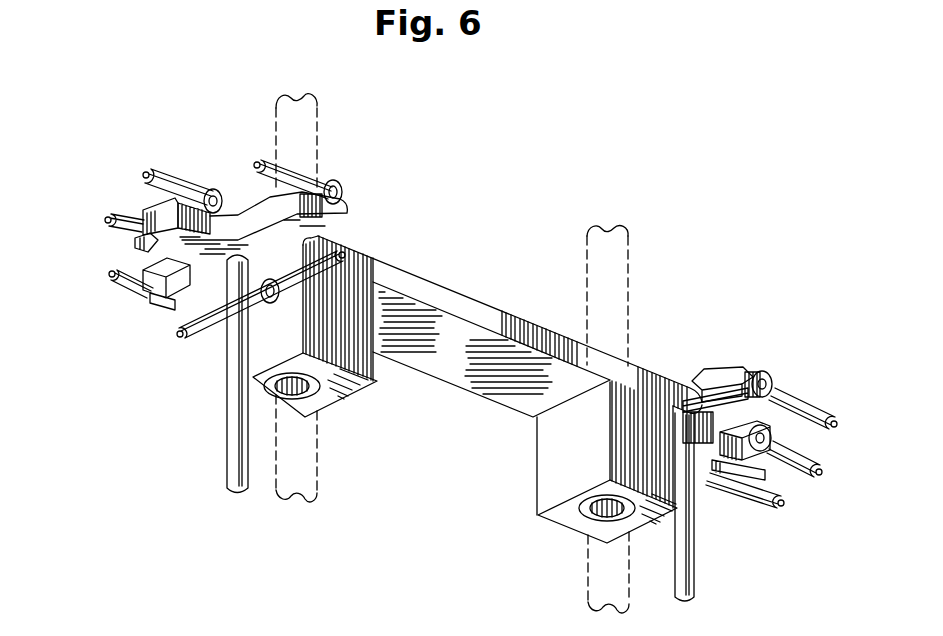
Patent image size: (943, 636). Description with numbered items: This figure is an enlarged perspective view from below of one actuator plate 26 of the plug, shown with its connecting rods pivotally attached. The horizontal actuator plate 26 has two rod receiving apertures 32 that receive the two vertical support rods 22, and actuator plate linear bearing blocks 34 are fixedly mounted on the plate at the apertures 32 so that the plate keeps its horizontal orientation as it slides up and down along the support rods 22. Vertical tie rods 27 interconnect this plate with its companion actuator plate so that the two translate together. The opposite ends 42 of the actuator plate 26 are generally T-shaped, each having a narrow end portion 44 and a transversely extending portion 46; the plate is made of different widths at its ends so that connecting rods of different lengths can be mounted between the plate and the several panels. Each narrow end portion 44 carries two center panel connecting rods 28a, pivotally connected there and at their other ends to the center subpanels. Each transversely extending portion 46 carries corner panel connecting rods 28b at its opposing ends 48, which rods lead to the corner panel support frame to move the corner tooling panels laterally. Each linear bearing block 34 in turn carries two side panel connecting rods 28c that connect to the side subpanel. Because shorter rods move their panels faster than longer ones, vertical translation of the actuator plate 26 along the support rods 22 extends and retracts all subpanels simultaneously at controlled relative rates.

The vertical support rod 22 is at (312, 126).
The actuator plate 26 is at (440, 272).
The vertical tie rod 27 is at (230, 433).
The center panel connecting rod 28a is at (174, 172).
The corner panel connecting rod 28b is at (258, 160).
The side panel connecting rod 28c is at (328, 262).
The rod receiving aperture 32 is at (306, 396).
The actuator plate linear bearing block 34 is at (343, 385).
The opposite end of the actuator plate 42 is at (145, 212).
The narrow end portion 44 is at (160, 240).
The transversely extending portion 46 is at (312, 224).
The opposing end of the transversely extending portion 48 is at (345, 203).